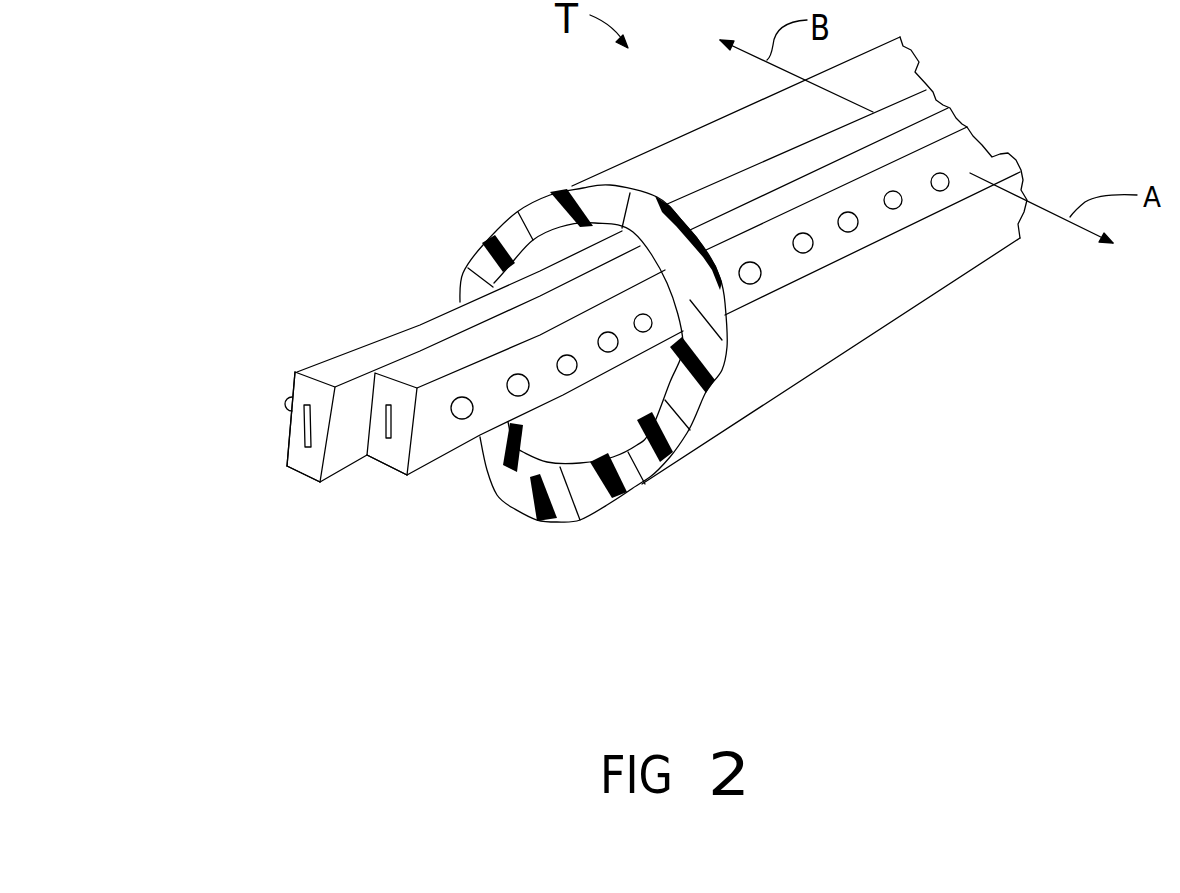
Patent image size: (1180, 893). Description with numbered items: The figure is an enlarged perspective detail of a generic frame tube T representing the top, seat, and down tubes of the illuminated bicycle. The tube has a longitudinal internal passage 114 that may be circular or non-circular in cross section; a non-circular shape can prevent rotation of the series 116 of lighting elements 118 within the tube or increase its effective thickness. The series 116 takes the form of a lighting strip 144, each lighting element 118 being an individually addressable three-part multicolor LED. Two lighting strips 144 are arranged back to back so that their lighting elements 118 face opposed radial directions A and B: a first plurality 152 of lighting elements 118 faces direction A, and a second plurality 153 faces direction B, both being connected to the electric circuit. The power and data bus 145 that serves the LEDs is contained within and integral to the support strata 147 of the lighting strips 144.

The longitudinal internal passage 114 is at (598, 440).
The series of lighting elements 116 is at (275, 493).
The lighting elements 118 is at (283, 402).
The lighting strip 144 is at (467, 337).
The power and data bus 145 is at (300, 428).
The support strata 147 is at (283, 450).
The first plurality of lighting elements 152 is at (765, 330).
The second plurality of lighting elements 153 is at (197, 395).